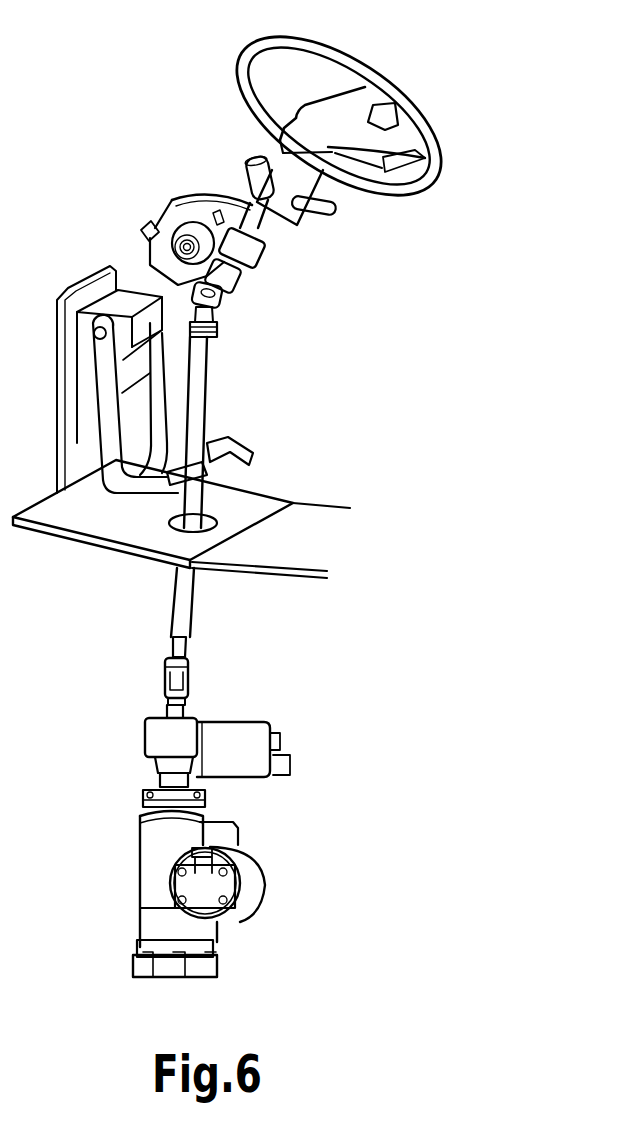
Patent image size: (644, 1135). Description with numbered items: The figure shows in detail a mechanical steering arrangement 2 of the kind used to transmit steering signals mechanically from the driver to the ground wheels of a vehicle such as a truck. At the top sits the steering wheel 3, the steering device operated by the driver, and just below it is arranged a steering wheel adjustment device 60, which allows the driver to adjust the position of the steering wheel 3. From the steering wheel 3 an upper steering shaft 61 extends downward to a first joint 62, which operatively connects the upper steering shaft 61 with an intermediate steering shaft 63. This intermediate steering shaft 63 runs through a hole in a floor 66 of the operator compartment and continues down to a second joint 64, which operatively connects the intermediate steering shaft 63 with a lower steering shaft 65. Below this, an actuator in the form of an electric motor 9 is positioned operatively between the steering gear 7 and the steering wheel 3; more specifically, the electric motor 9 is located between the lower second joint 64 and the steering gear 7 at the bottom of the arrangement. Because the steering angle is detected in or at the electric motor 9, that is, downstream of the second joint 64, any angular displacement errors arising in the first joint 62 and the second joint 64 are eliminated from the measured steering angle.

The mechanical steering arrangement 2 is at (413, 304).
The steering wheel 3 is at (355, 70).
The steering gear 7 is at (286, 856).
The electric motor 9 is at (182, 733).
The steering wheel adjustment device 60 is at (150, 185).
The upper steering shaft 61 is at (258, 236).
The first joint 62 is at (221, 311).
The intermediate steering shaft 63 is at (201, 411).
The second joint 64 is at (178, 680).
The lower steering shaft 65 is at (165, 712).
The floor 66 is at (250, 500).